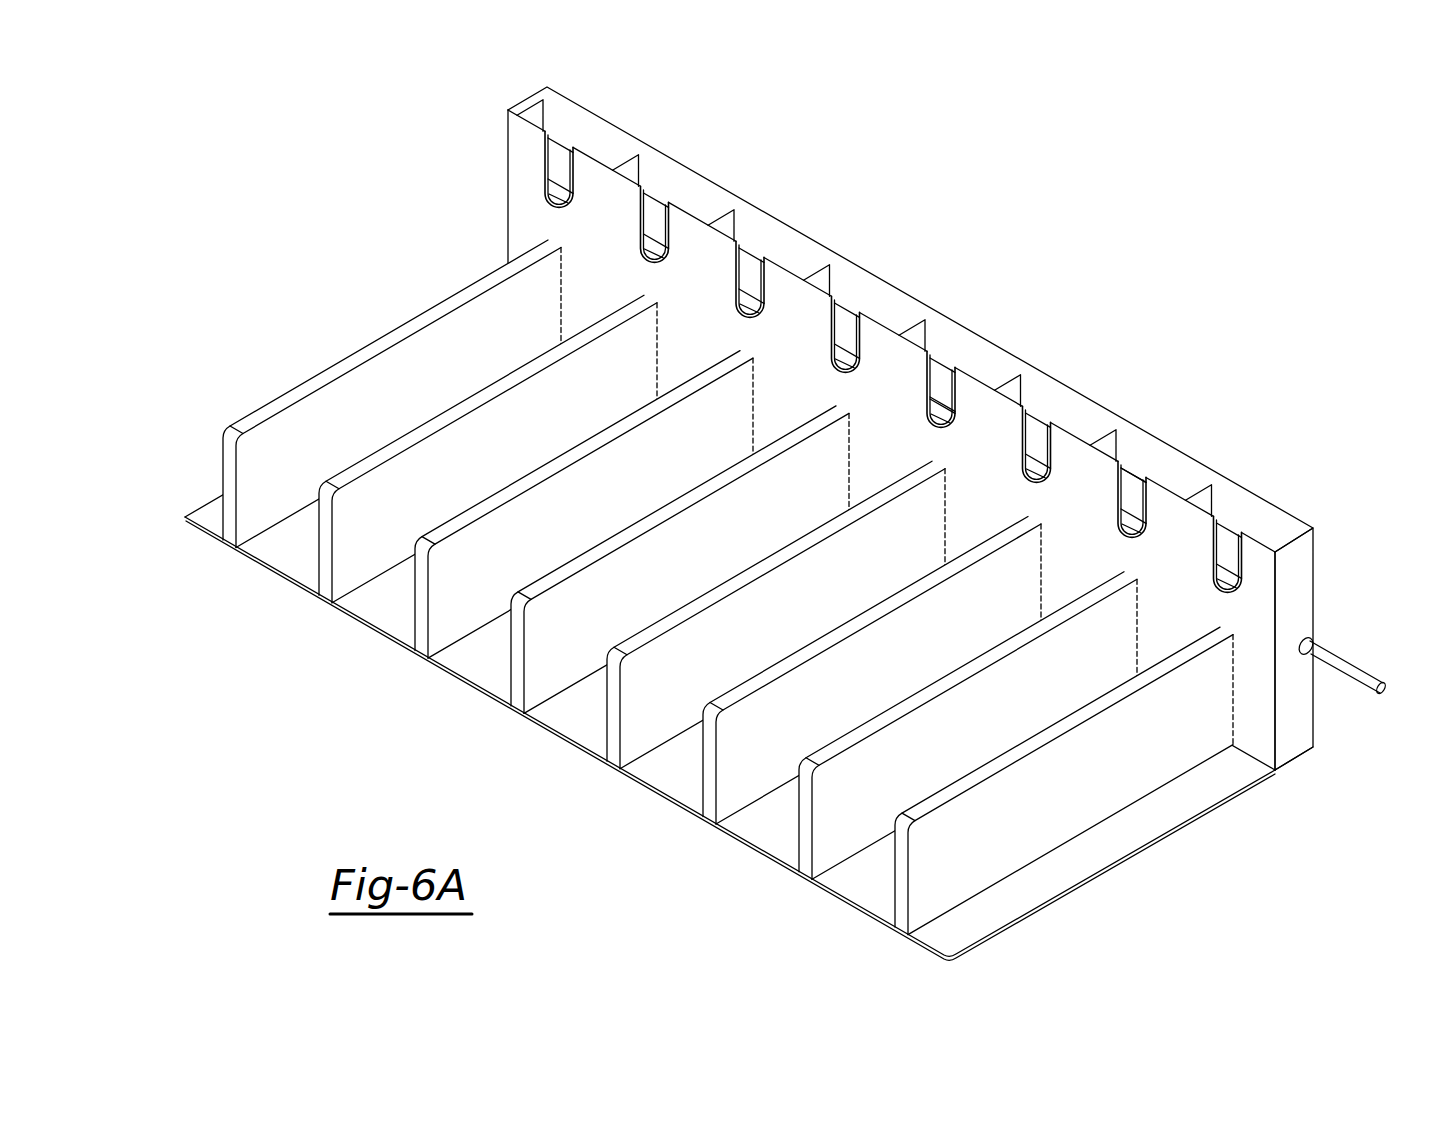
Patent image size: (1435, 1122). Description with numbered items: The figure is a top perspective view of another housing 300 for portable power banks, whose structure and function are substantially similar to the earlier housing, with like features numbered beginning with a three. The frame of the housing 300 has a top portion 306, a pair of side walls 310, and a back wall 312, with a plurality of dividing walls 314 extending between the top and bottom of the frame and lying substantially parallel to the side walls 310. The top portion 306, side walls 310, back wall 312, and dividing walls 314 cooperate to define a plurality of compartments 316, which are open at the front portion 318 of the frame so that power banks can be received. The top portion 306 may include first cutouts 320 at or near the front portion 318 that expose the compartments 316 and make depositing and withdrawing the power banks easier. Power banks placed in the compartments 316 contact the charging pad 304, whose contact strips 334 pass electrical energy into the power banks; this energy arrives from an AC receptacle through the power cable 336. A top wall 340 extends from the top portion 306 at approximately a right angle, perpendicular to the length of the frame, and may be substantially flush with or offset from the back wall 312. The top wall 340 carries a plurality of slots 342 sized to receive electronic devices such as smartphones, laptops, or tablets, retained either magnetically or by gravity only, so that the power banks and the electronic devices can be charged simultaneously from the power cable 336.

The housing 300 is at (767, 518).
The charging pad 304 is at (1134, 494).
The top portion 306 is at (912, 422).
The side walls 310 is at (506, 105).
The back wall 312 is at (1292, 750).
The dividing walls 314 is at (630, 182).
The compartments 316 is at (562, 125).
The front portion 318 is at (912, 422).
The first cutouts 320 is at (601, 137).
The contact strips 334 is at (944, 388).
The power cable 336 is at (1368, 661).
The top wall 340 is at (688, 611).
The slots 342 is at (322, 598).